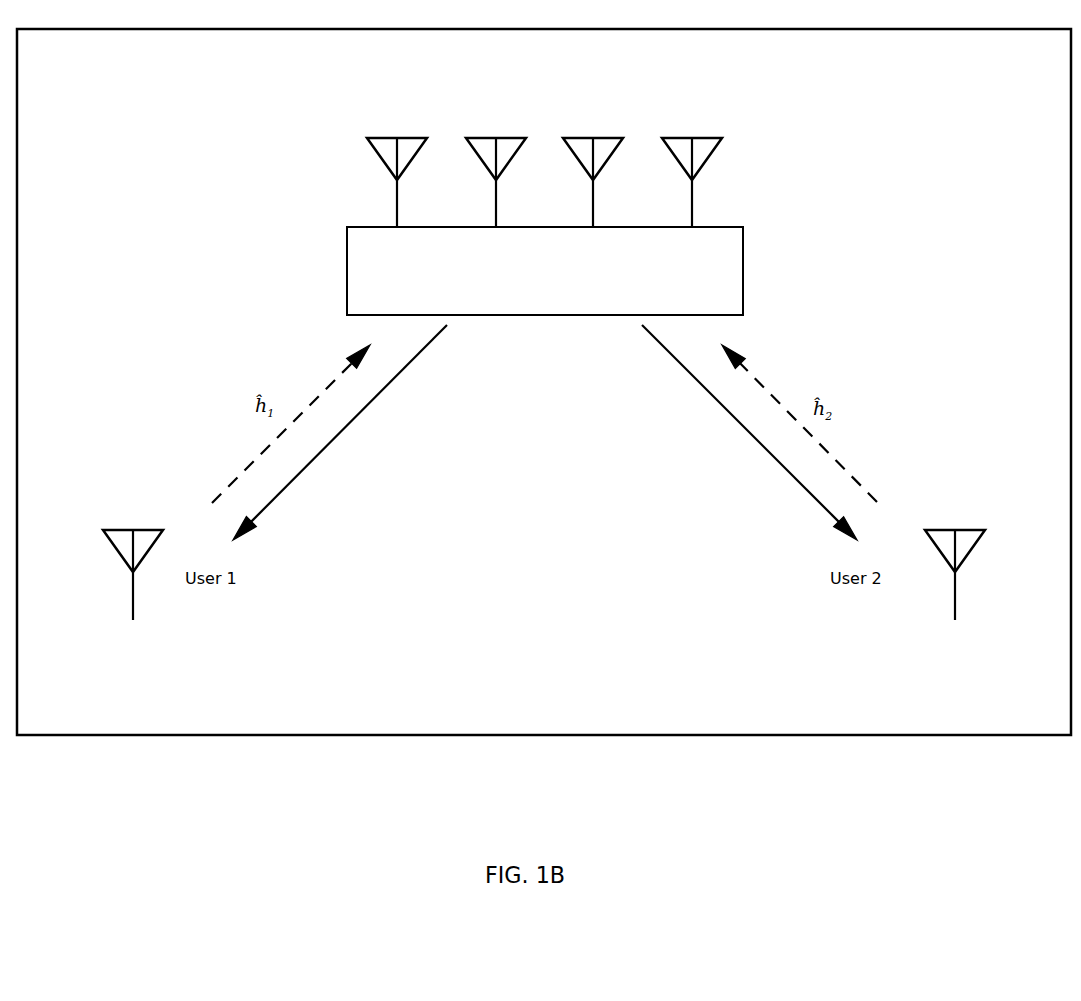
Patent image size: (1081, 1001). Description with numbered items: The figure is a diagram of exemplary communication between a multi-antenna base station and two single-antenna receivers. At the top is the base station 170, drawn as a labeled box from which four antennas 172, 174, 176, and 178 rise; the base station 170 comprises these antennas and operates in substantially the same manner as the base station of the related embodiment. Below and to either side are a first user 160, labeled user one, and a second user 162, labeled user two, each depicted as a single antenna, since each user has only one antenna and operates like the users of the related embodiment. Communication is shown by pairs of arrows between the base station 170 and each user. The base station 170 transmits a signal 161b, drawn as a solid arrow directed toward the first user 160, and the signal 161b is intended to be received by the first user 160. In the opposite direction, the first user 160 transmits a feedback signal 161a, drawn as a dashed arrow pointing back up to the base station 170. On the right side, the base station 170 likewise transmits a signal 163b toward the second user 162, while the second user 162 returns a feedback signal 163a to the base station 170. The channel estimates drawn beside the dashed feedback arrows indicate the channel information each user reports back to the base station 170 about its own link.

The base station 170 is at (347, 283).
The antenna 172 is at (372, 137).
The antenna 174 is at (468, 137).
The antenna 176 is at (591, 137).
The antenna 178 is at (702, 137).
The first user 160 is at (126, 528).
The second user 162 is at (963, 528).
The feedback signal 161a is at (300, 396).
The signal 161b is at (353, 423).
The feedback signal 163a is at (868, 485).
The signal 163b is at (738, 433).